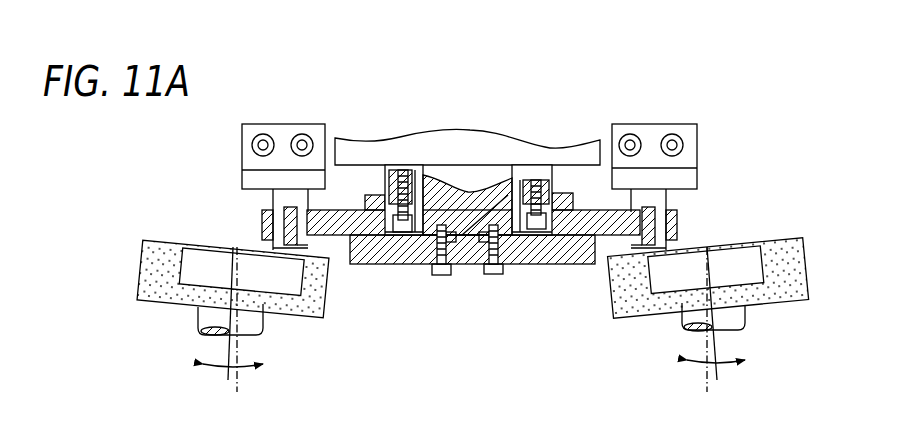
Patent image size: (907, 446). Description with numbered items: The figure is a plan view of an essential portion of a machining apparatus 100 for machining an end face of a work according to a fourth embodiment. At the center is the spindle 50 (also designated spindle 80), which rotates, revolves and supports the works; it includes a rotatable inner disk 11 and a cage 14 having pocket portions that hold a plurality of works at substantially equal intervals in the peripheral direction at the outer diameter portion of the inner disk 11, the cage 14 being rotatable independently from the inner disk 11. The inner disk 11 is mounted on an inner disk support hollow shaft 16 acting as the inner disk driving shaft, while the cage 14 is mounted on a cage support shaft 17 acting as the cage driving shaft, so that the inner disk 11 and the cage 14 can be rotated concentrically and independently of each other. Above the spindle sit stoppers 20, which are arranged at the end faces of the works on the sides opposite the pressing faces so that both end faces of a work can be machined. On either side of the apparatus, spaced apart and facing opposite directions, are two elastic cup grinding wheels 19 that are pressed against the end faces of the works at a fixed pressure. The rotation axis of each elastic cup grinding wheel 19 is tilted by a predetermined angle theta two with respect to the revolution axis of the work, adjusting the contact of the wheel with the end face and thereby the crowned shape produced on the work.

The machining apparatus 100 is at (546, 106).
The spindle 50 is at (370, 138).
The spindle 80 is at (460, 118).
The stopper 20 is at (242, 182).
The elastic cup grinding wheel 19 is at (160, 241).
The inner disk 11 is at (562, 220).
The cage support shaft 17 is at (468, 224).
The cage 14 is at (368, 260).
The inner disk support hollow shaft 16 is at (402, 262).